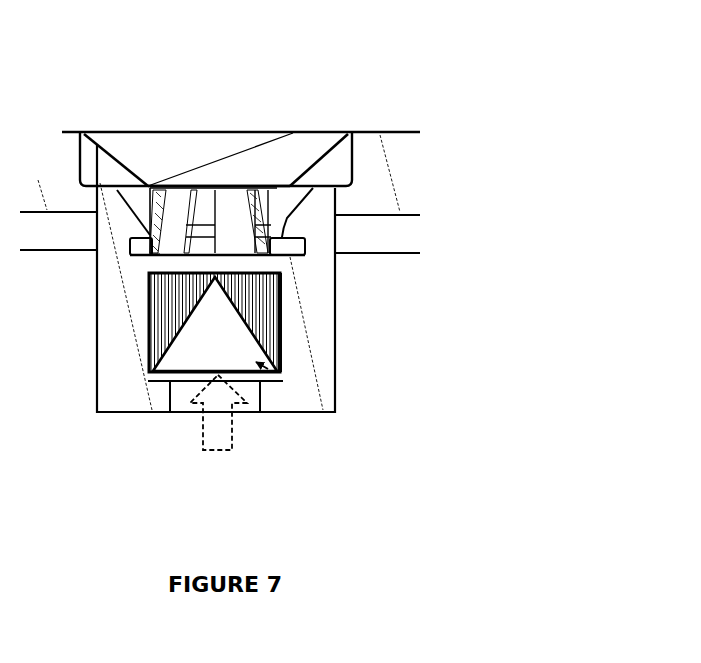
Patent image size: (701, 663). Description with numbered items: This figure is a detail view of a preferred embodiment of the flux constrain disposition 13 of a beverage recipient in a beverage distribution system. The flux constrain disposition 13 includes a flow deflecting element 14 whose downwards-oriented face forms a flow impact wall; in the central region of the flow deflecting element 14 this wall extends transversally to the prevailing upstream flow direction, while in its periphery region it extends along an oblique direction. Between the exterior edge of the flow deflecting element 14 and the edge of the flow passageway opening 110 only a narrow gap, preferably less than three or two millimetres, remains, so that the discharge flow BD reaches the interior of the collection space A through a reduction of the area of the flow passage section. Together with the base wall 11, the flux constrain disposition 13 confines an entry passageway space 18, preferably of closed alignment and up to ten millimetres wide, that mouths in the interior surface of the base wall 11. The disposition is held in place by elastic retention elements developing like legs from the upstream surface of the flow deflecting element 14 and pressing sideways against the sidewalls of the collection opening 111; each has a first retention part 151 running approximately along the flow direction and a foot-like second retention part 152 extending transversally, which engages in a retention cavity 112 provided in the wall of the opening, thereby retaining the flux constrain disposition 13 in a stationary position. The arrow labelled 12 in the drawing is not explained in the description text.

The collection space A is at (237, 24).
The base wall 11 is at (221, 258).
The light source 12 is at (283, 373).
The flux constrain disposition 13 is at (220, 144).
The flow deflecting element 14 is at (139, 153).
The entry passageway space 18 is at (348, 131).
The flow passageway opening 110 is at (287, 203).
The collection opening 111 is at (127, 210).
The retention cavity 112 is at (142, 256).
The first retention part 151 is at (279, 302).
The second retention part 152 is at (152, 257).
The discharge flow BD is at (218, 428).